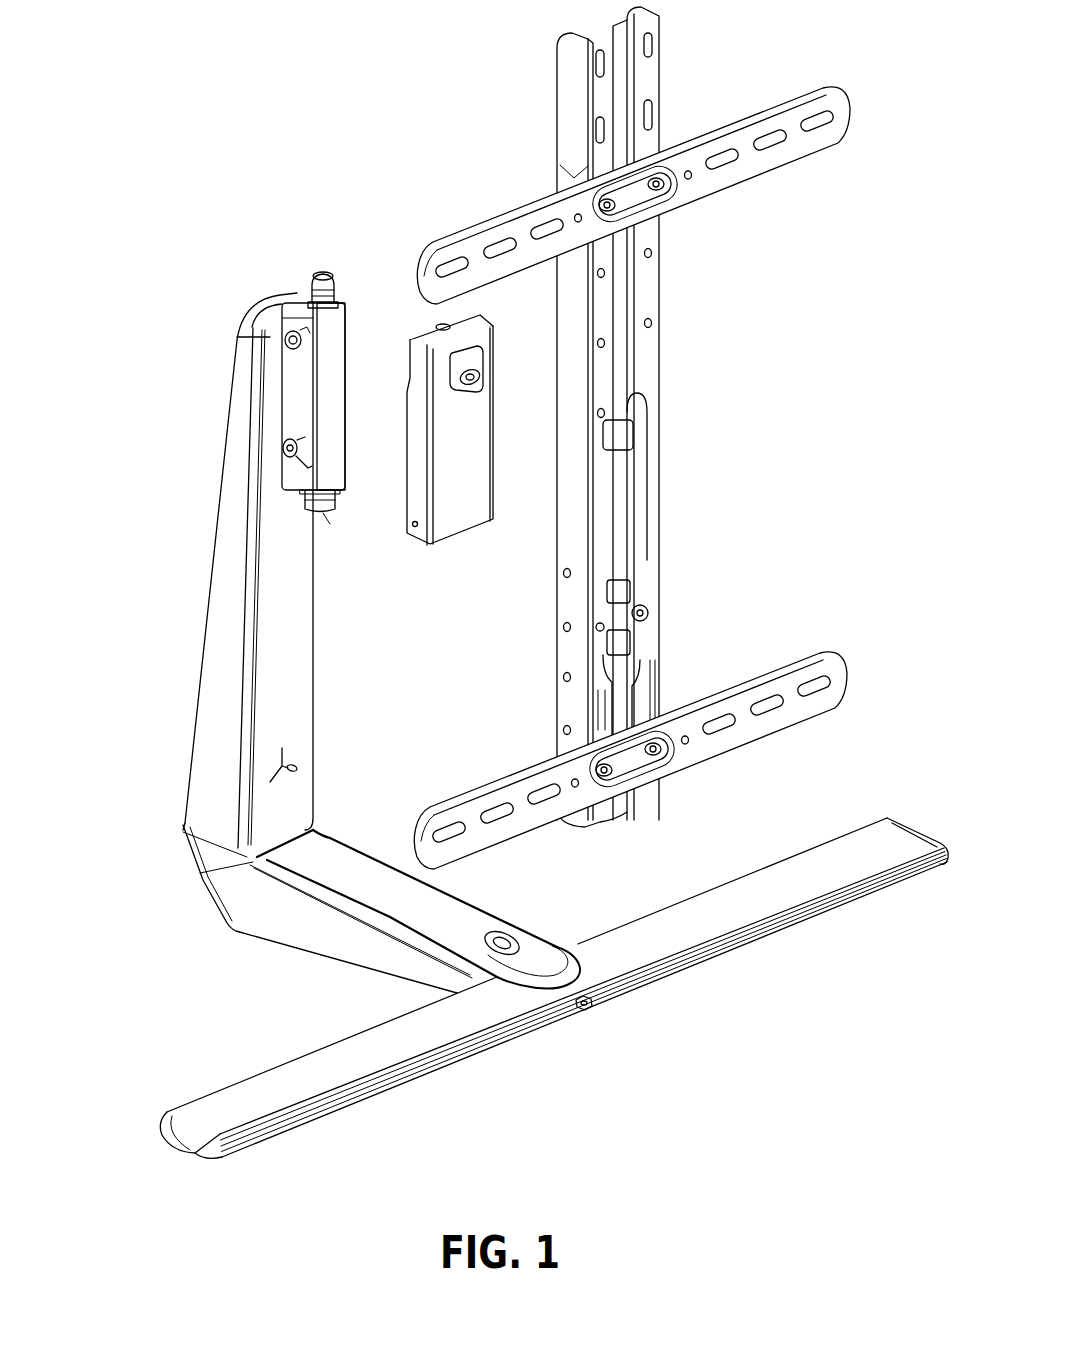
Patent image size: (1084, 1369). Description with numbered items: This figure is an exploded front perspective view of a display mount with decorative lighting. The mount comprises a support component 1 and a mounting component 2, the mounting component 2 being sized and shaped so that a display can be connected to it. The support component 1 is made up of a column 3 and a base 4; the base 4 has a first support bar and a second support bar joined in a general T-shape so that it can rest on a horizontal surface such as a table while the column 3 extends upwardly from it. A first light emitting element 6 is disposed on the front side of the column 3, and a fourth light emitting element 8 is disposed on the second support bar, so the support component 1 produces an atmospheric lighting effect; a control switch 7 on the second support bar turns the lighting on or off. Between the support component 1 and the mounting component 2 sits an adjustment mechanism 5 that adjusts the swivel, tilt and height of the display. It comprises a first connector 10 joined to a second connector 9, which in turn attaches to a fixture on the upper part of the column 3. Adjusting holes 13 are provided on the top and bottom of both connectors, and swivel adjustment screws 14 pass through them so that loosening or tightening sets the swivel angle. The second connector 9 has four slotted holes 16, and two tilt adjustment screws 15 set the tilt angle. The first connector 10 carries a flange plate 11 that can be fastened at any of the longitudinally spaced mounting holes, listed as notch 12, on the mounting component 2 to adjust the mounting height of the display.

The support component 1 is at (182, 890).
The mounting component 2 is at (647, 340).
The column 3 is at (220, 630).
The base 4 is at (457, 1017).
The adjustment mechanism 5 is at (312, 292).
The first light emitting element 6 is at (280, 767).
The control switch 7 is at (582, 1006).
The fourth light emitting element 8 is at (507, 933).
The second connector 9 is at (303, 403).
The first connector 10 is at (467, 505).
The flange plate 11 is at (477, 380).
The notch 12 is at (647, 445).
The adjusting hole 13 is at (440, 323).
The swivel adjustment screw 14 is at (372, 372).
The tilt adjustment screw 15 is at (290, 455).
The slotted hole 16 is at (351, 528).